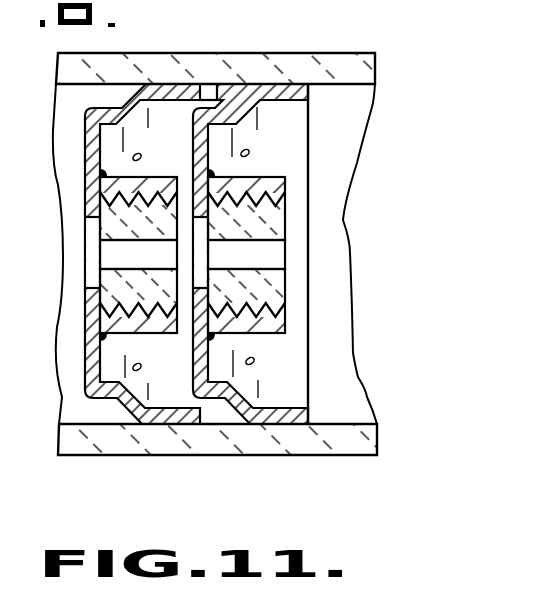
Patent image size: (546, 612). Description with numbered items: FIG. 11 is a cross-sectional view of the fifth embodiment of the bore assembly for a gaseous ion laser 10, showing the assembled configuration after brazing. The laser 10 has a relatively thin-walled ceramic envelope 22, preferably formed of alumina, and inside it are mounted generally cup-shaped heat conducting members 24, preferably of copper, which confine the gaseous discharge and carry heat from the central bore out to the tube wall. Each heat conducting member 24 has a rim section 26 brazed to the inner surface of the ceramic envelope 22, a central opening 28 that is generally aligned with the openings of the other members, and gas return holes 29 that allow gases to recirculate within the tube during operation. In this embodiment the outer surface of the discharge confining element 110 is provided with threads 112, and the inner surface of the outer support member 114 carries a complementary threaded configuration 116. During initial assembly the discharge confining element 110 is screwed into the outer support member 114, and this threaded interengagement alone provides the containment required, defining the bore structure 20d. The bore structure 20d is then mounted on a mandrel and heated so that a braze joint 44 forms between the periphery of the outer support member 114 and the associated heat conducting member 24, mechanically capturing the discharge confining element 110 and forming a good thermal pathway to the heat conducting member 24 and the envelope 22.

The gaseous ion laser 10 is at (219, 227).
The ceramic envelope 22 is at (256, 60).
The heat conducting member 24 is at (297, 382).
The rim section 26 is at (309, 93).
The central opening 28 is at (93, 287).
The gas return hole 29 is at (255, 360).
The braze joint 44 is at (98, 160).
The discharge confining element 110 is at (282, 283).
The threads 112 is at (279, 179).
The outer support member 114 is at (284, 318).
The complementary threaded configuration 116 is at (257, 177).
The bore structure 20d is at (321, 225).